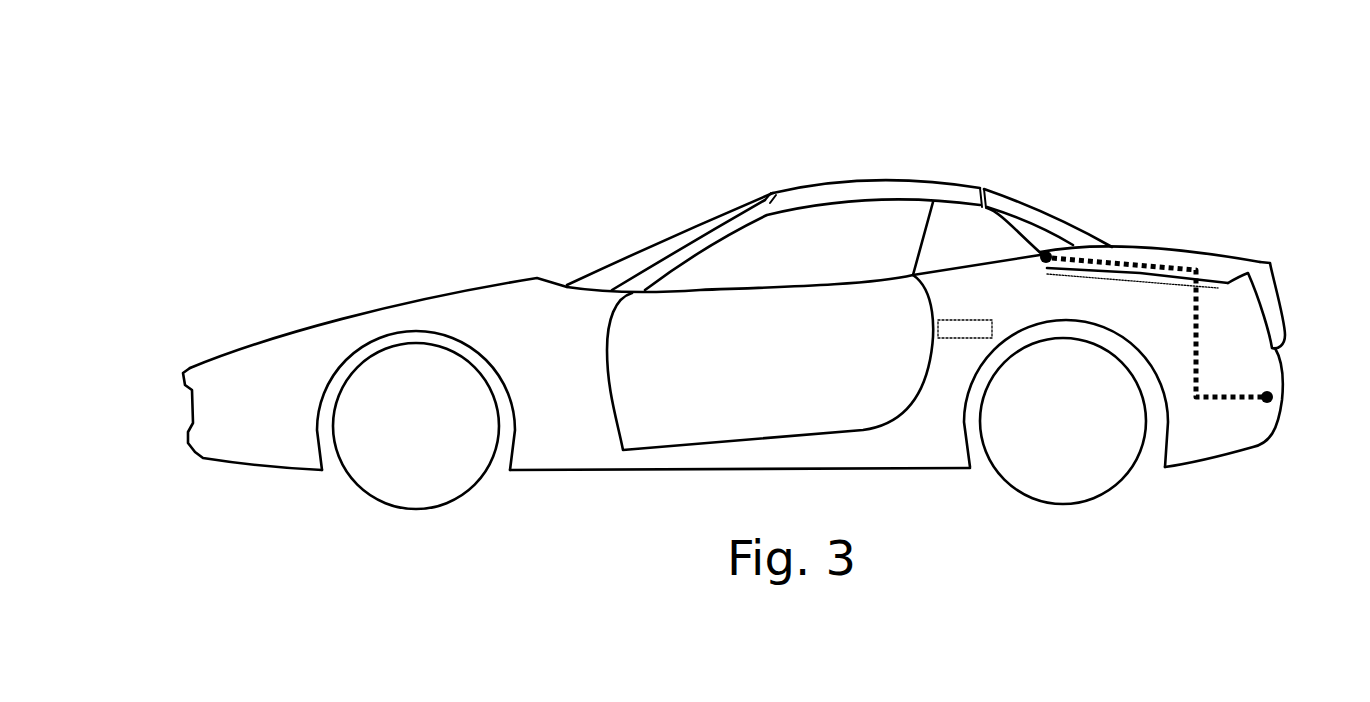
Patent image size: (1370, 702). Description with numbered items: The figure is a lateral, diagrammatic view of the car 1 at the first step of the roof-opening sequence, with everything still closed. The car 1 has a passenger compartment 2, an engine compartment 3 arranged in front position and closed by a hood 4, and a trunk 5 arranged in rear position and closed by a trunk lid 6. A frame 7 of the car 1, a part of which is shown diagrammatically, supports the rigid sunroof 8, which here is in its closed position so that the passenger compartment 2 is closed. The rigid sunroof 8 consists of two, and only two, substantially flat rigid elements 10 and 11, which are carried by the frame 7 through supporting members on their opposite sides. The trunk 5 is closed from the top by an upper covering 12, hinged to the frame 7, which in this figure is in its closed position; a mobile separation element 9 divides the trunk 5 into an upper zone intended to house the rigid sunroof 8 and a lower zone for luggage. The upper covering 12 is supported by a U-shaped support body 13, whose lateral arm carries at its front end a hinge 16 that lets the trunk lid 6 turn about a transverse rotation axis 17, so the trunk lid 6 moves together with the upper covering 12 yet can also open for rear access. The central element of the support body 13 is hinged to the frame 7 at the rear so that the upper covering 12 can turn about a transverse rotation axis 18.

The car 1 is at (733, 294).
The passenger compartment 2 is at (818, 268).
The engine compartment 3 is at (373, 275).
The hood 4 is at (322, 303).
The trunk 5 is at (1179, 184).
The trunk lid 6 is at (1240, 267).
The frame 7 is at (964, 333).
The rigid sunroof 8 is at (945, 118).
The mobile separation element 9 is at (1168, 286).
The rigid element 10 is at (891, 185).
The rigid element 11 is at (1011, 199).
The upper covering 12 is at (1133, 226).
The support body 13 is at (1113, 310).
The hinge 16 is at (671, 243).
The rotation axis 17 is at (1047, 251).
The rotation axis 18 is at (1270, 395).